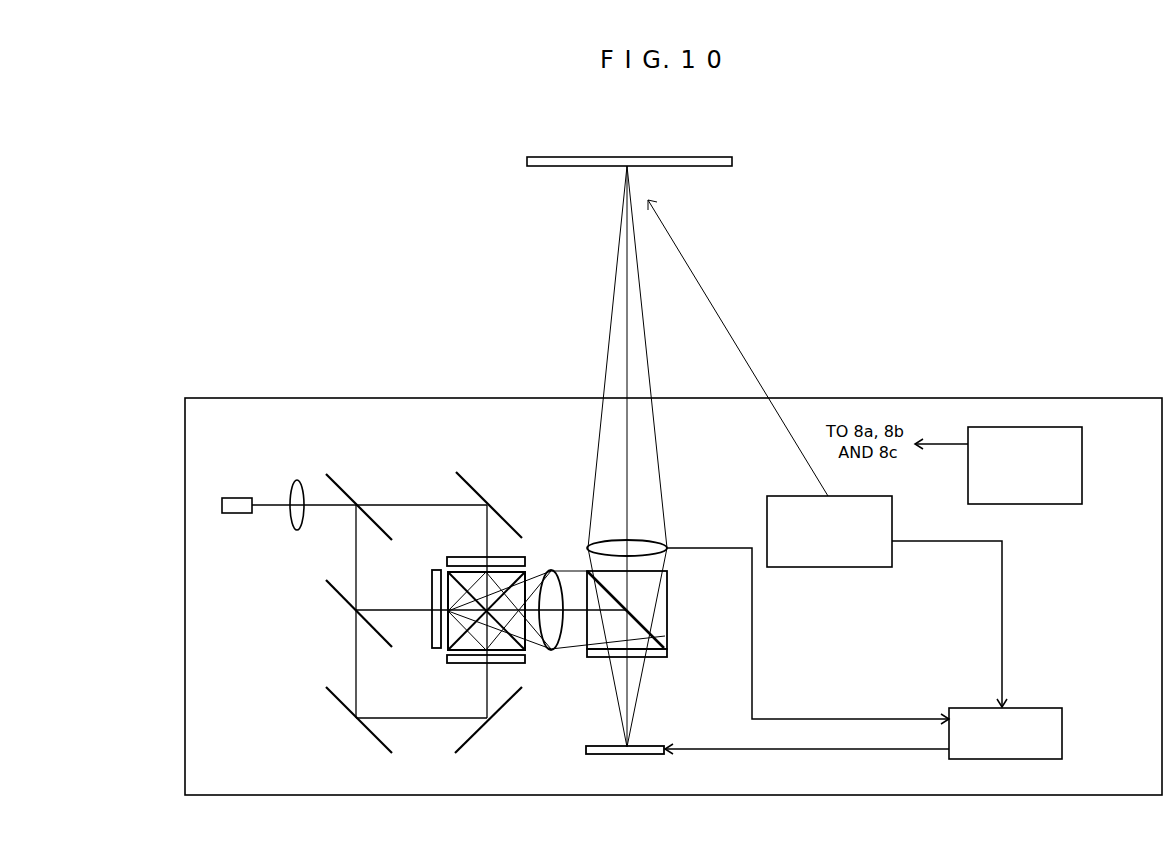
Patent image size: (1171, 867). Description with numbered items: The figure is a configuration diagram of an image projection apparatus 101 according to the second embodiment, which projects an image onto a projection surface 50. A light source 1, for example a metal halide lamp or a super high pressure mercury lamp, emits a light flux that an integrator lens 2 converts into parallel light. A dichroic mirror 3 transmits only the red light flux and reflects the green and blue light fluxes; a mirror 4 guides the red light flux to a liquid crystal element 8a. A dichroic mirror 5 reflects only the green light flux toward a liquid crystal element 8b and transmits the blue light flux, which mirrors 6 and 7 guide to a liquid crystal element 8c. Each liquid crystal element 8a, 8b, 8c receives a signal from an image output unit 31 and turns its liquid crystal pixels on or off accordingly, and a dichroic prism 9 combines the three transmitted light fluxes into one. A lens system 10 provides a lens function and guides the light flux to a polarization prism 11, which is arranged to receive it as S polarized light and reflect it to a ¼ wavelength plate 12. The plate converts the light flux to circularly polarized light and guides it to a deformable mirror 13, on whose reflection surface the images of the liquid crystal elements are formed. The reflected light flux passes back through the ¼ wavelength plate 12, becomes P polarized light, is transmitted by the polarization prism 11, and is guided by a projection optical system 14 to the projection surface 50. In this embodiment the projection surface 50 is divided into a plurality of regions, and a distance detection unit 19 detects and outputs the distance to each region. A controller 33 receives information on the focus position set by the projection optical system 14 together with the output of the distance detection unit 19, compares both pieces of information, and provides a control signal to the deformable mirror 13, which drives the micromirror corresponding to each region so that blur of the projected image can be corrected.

The light source 1 is at (242, 497).
The integrator lens 2 is at (297, 480).
The dichroic mirror 3 is at (332, 474).
The mirror 4 is at (463, 472).
The dichroic mirror 5 is at (328, 587).
The mirror 6 is at (328, 695).
The mirror 7 is at (477, 735).
The liquid crystal element 8a is at (462, 557).
The liquid crystal element 8b is at (432, 582).
The liquid crystal element 8c is at (457, 663).
The dichroic prism 9 is at (526, 638).
The lens system 10 is at (553, 570).
The polarization prism 11 is at (667, 645).
The ¼ wavelength plate 12 is at (667, 658).
The deformable mirror 13 is at (635, 755).
The projection optical system 14 is at (667, 543).
The distance detection unit 19 is at (840, 567).
The image output unit 31 is at (1082, 452).
The controller 33 is at (1062, 722).
The projection surface 50 is at (527, 161).
The image projection apparatus 101 is at (870, 398).